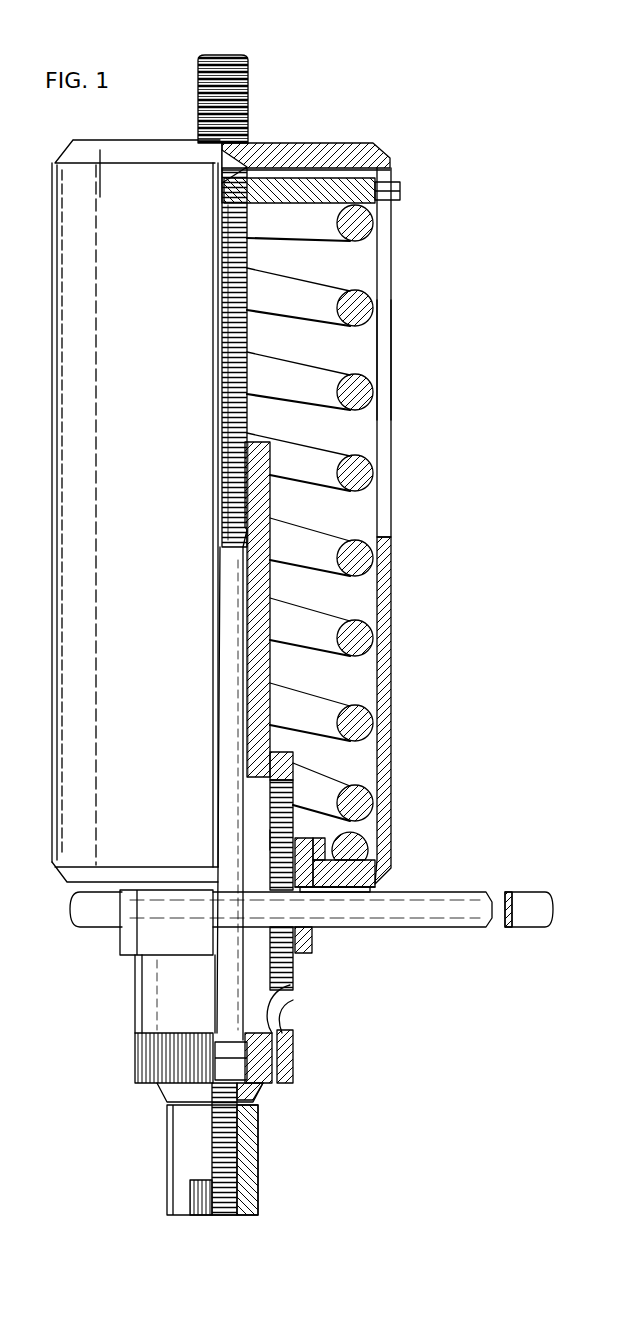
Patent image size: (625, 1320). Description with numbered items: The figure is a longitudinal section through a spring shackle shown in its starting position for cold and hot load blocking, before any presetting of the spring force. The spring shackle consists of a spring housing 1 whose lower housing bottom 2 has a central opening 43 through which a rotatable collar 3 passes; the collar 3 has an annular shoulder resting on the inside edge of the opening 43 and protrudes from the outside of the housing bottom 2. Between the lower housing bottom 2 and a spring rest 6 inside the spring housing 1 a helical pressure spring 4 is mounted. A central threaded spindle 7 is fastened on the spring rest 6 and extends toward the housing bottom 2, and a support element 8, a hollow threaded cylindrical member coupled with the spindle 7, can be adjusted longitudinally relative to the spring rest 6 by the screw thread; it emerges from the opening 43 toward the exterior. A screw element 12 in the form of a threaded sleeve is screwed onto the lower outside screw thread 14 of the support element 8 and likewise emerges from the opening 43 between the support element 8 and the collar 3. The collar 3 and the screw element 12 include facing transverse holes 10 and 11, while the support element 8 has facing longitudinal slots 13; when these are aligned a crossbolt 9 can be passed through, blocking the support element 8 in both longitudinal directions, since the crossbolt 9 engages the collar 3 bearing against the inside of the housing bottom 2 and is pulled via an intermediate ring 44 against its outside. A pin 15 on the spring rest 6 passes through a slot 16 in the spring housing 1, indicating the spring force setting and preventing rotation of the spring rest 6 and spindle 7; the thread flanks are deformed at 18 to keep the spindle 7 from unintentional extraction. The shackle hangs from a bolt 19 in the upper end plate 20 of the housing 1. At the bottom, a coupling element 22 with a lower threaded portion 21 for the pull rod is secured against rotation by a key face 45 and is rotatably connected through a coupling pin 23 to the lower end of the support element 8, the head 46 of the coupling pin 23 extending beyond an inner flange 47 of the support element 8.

The spring housing 1 is at (382, 567).
The lower housing bottom 2 is at (383, 870).
The rotatable collar 3 is at (325, 845).
The helical pressure spring 4 is at (357, 307).
The spring rest 6 is at (285, 190).
The central threaded spindle 7 is at (245, 425).
The support element 8 is at (258, 686).
The crossbolt 9 is at (490, 912).
The transverse hole 10 is at (312, 943).
The transverse hole 11 is at (285, 803).
The screw element 12 is at (288, 770).
The longitudinal slot 13 is at (255, 803).
The lower outside screw thread 14 is at (270, 840).
The pin 15 is at (400, 190).
The slot 16 is at (385, 362).
The deformed thread flanks 18 is at (243, 547).
The bolt 19 is at (246, 72).
The upper end plate 20 is at (333, 150).
The lower threaded portion 21 is at (215, 1167).
The coupling element 22 is at (245, 1190).
The coupling pin 23 is at (240, 1130).
The central opening 43 is at (270, 880).
The intermediate ring 44 is at (350, 897).
The key face 45 is at (200, 1198).
The head 46 is at (243, 1072).
The inner flange 47 is at (262, 1090).